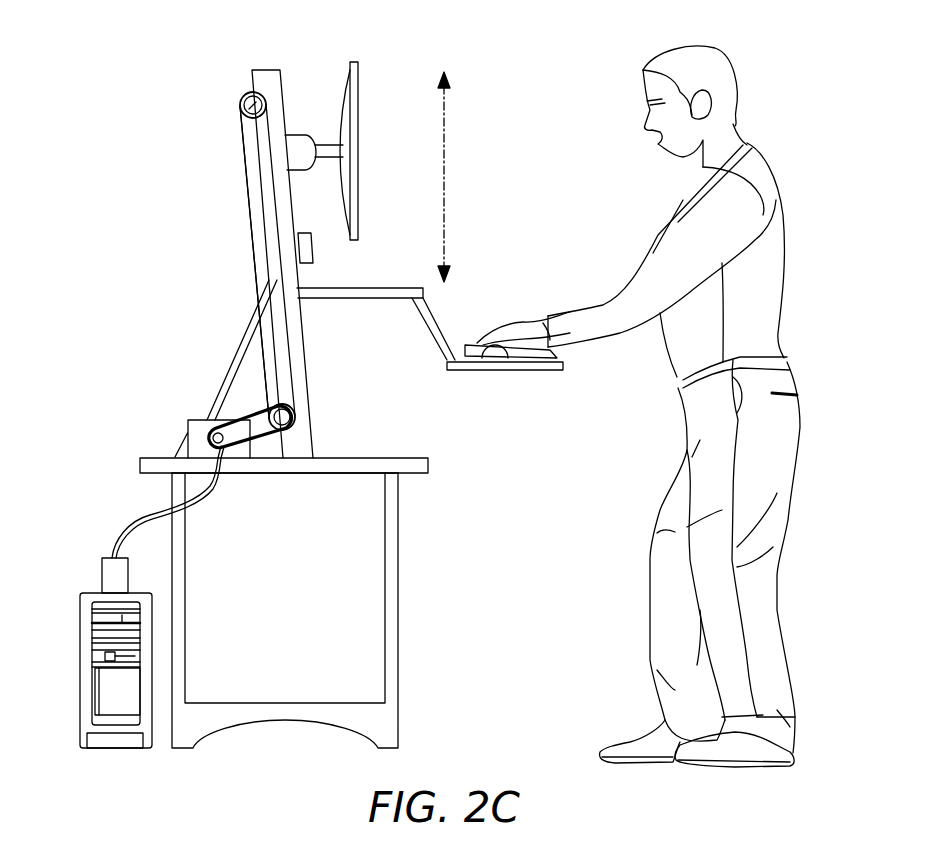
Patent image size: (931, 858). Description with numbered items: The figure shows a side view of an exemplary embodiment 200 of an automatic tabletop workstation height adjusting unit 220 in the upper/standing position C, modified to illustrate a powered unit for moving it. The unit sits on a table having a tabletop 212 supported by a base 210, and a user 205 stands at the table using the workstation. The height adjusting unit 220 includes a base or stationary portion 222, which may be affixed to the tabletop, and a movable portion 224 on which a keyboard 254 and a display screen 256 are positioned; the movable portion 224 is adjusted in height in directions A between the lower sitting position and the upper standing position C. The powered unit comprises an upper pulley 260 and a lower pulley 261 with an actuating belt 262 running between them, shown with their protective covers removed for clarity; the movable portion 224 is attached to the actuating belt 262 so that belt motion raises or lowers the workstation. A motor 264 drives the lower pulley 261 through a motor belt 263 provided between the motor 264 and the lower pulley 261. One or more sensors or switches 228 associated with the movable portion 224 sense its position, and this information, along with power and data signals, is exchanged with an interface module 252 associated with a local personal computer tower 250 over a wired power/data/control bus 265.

The exemplary embodiment 200 is at (266, 68).
The user 205 is at (662, 53).
The base 210 is at (400, 529).
The tabletop 212 is at (285, 467).
The automatic tabletop workstation height adjusting unit 220 is at (142, 70).
The base or stationary portion 222 is at (235, 342).
The movable portion 224 is at (298, 134).
The sensors or switches 228 is at (313, 247).
The local personal computer tower 250 is at (79, 624).
The interface module 252 is at (102, 565).
The keyboard 254 is at (472, 343).
The display screen 256 is at (360, 180).
The upper pulley 260 is at (242, 108).
The lower pulley 261 is at (291, 403).
The actuating belt 262 is at (250, 214).
The motor belt 263 is at (252, 410).
The motor 264 is at (202, 427).
The wired power/data/control bus 265 is at (140, 516).
The upper/standing position C is at (250, 147).
The directions A is at (446, 165).